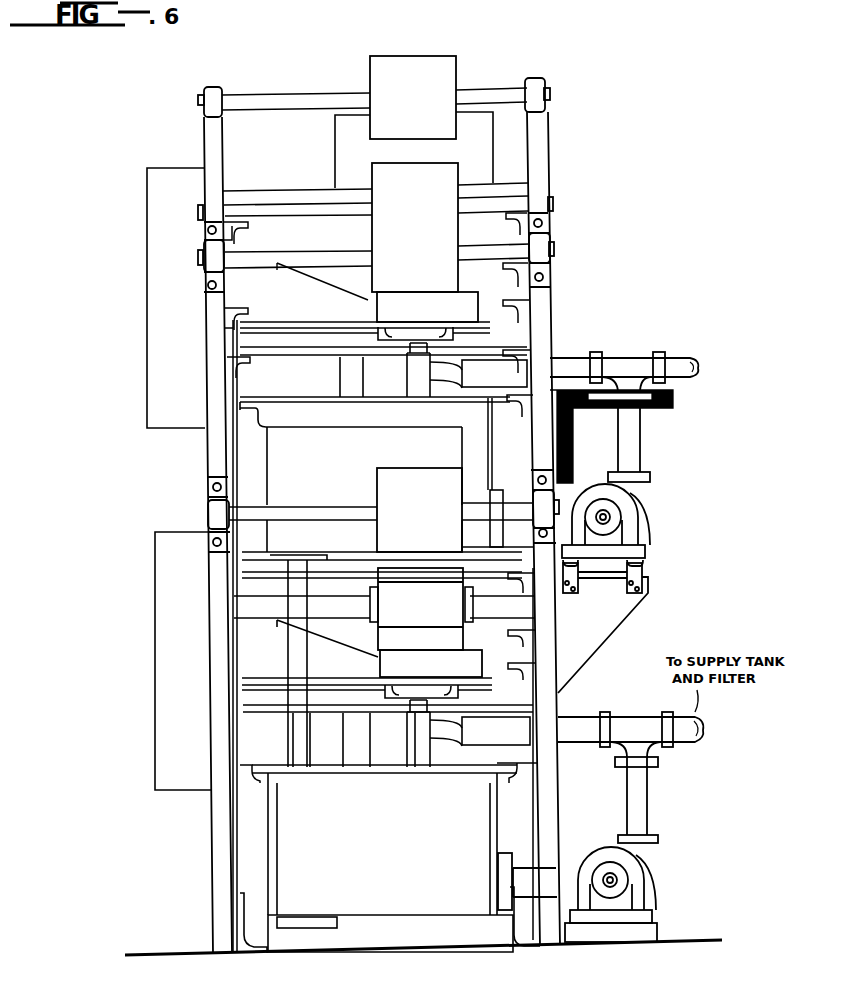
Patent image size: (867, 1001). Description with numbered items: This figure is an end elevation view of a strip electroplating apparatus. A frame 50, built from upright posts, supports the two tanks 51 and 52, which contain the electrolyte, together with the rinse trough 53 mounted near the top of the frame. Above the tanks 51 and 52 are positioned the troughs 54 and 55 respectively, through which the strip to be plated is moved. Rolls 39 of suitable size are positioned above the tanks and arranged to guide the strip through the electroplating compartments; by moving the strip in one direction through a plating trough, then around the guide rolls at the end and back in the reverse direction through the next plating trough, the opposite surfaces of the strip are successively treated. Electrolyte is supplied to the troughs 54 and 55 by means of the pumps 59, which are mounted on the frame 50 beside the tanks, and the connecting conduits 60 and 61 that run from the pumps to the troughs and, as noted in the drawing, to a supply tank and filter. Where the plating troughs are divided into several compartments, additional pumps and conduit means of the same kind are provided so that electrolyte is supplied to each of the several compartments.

The rolls 39 is at (370, 74).
The frame 50 is at (205, 460).
The tank 51 is at (345, 818).
The tank 52 is at (338, 456).
The rinse trough 53 is at (340, 148).
The trough 54 is at (417, 662).
The trough 55 is at (424, 302).
The pumps 59 is at (632, 510).
The connecting conduit 60 is at (520, 518).
The connecting conduit 61 is at (625, 440).